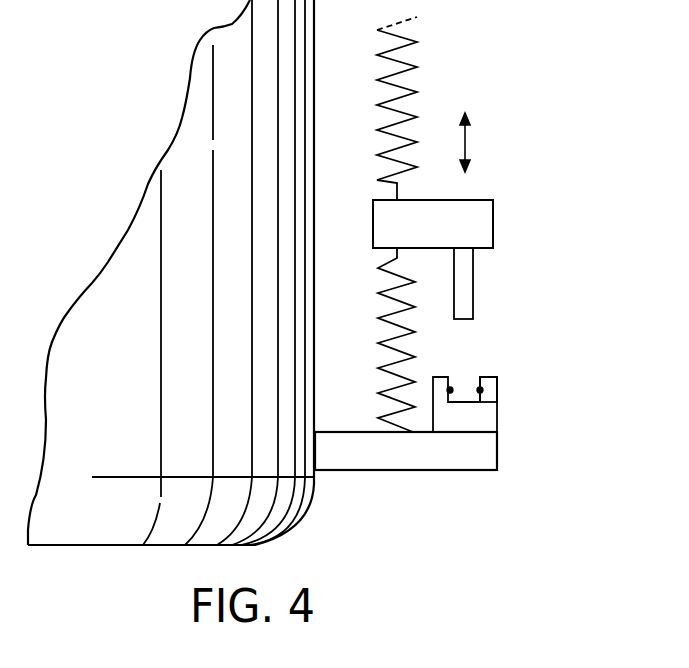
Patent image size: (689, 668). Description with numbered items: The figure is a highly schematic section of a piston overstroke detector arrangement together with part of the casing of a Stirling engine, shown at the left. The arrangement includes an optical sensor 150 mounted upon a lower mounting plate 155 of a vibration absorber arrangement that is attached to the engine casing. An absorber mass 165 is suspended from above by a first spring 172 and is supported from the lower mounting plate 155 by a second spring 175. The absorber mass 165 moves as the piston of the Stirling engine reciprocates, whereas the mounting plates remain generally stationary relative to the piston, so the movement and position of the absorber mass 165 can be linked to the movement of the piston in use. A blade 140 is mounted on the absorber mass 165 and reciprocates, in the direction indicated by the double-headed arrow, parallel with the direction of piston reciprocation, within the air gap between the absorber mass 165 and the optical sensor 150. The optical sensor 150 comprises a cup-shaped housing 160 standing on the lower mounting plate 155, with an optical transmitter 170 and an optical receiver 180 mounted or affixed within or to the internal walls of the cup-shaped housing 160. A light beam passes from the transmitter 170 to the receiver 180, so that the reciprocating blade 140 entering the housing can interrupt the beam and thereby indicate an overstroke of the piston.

The optical sensor 150 is at (543, 54).
The lower mounting plate 155 is at (428, 470).
The cup-shaped housing 160 is at (497, 415).
The absorber mass 165 is at (493, 200).
The optical transmitter 170 is at (497, 388).
The first spring 172 is at (412, 90).
The second spring 175 is at (412, 352).
The optical receiver 180 is at (450, 390).
The blade 140 is at (474, 306).